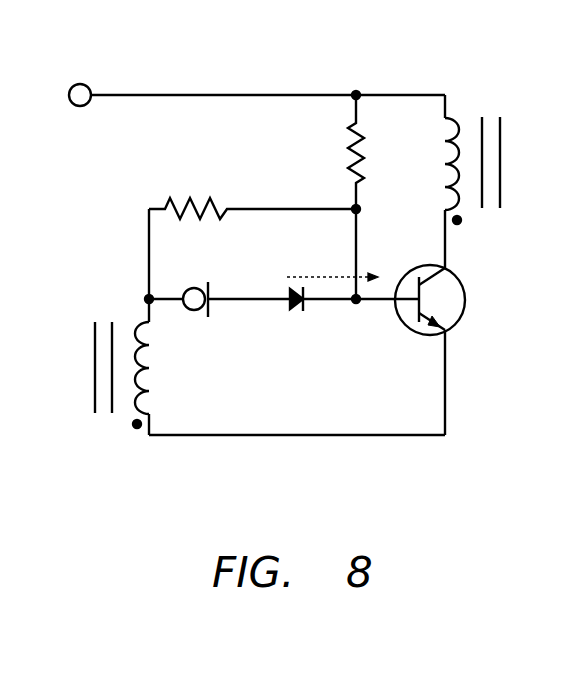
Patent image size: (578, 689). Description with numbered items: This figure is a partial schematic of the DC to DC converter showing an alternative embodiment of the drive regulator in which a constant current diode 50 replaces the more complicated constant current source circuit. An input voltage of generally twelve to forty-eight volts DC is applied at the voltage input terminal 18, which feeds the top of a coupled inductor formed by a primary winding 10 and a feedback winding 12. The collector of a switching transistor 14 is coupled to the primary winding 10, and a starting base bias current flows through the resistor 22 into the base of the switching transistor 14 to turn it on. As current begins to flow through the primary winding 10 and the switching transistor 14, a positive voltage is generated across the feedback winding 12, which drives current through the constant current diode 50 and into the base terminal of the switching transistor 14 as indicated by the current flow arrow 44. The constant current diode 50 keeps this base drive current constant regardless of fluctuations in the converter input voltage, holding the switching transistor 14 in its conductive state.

The primary winding 10 is at (445, 146).
The feedback winding 12 is at (92, 365).
The switching transistor 14 is at (418, 266).
The voltage input terminal 18 is at (73, 86).
The resistor 22 is at (348, 158).
The current flow arrow 44 is at (322, 277).
The constant current diode 50 is at (191, 288).